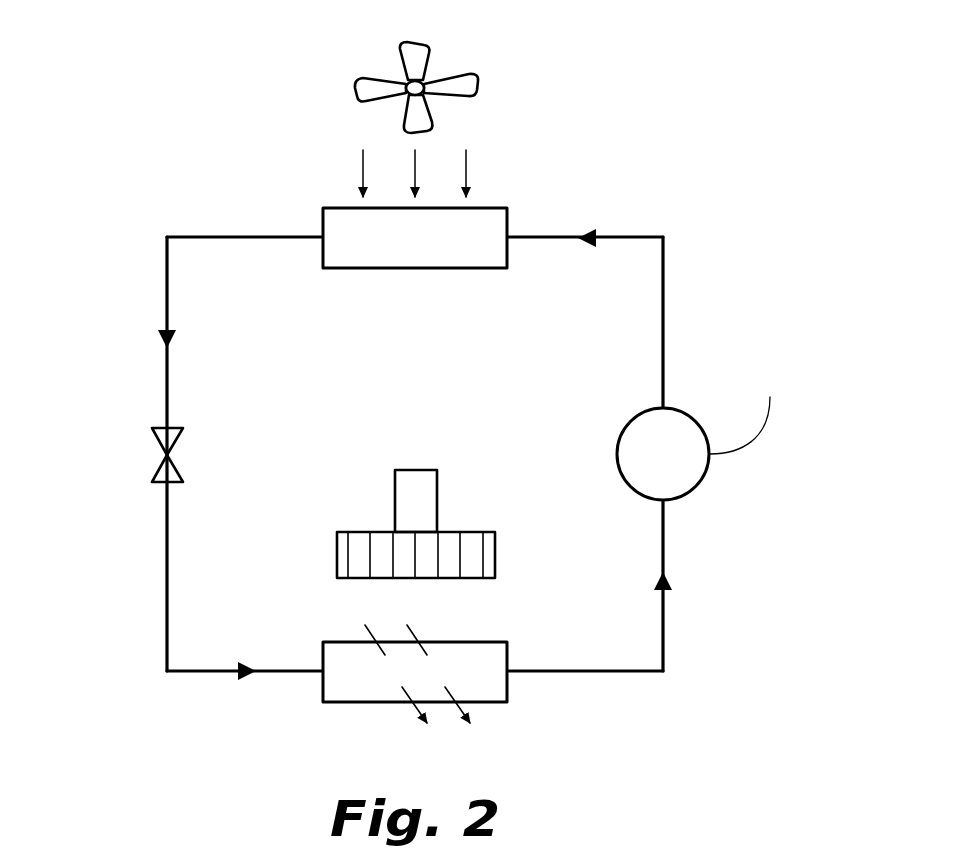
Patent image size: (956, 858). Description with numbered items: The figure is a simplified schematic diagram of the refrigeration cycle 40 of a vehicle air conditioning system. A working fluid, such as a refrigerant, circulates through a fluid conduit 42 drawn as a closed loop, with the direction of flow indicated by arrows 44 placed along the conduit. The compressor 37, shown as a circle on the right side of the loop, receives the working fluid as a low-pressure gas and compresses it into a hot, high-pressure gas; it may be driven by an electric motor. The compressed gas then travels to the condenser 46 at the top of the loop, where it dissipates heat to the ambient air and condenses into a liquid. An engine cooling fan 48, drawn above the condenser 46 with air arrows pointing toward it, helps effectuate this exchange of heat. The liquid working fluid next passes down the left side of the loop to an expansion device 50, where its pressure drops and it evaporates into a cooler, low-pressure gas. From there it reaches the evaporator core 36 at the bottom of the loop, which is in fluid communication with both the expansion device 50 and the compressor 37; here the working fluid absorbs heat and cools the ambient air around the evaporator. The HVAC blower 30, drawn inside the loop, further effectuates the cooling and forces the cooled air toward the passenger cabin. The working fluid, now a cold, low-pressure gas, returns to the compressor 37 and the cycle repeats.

The HVAC blower 30 is at (458, 502).
The evaporator core 36 is at (507, 686).
The compressor 37 is at (677, 467).
The refrigeration cycle 40 is at (570, 82).
The fluid conduit 42 is at (247, 236).
The arrows 44 is at (582, 232).
The condenser 46 is at (485, 208).
The engine cooling fan 48 is at (380, 48).
The expansion device 50 is at (158, 463).